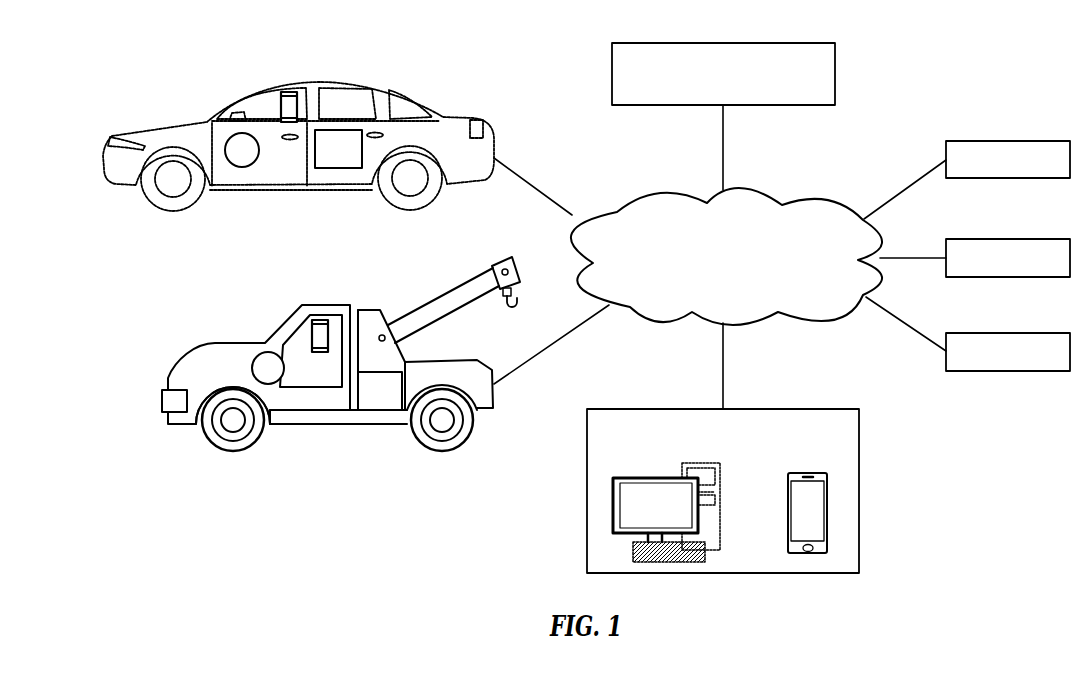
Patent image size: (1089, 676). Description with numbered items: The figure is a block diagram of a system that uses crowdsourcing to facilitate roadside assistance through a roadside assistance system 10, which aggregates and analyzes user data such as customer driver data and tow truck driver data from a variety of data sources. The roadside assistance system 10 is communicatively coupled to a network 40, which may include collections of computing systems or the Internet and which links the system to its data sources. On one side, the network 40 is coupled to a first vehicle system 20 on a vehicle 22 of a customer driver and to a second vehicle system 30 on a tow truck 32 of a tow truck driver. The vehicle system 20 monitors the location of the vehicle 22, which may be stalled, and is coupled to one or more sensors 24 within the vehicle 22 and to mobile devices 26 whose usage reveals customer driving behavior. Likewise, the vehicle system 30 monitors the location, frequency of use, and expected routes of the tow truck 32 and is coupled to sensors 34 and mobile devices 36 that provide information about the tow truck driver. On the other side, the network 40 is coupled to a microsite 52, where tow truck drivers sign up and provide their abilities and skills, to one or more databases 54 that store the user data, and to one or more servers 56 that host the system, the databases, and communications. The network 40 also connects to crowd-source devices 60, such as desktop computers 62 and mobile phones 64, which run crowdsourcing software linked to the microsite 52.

The roadside assistance system 10 is at (727, 43).
The first vehicle system 20 is at (341, 130).
The vehicle 22 is at (452, 116).
The sensors 24 is at (225, 150).
The mobile devices 26 is at (280, 106).
The second vehicle system 30 is at (390, 358).
The tow truck 32 is at (328, 304).
The sensors 34 is at (252, 368).
The mobile devices 36 is at (311, 334).
The network 40 is at (766, 191).
The microsite 52 is at (1010, 141).
The databases 54 is at (1010, 239).
The servers 56 is at (1010, 333).
The crowd-source devices 60 is at (859, 492).
The desktop computers 62 is at (657, 478).
The mobile phones 64 is at (788, 508).